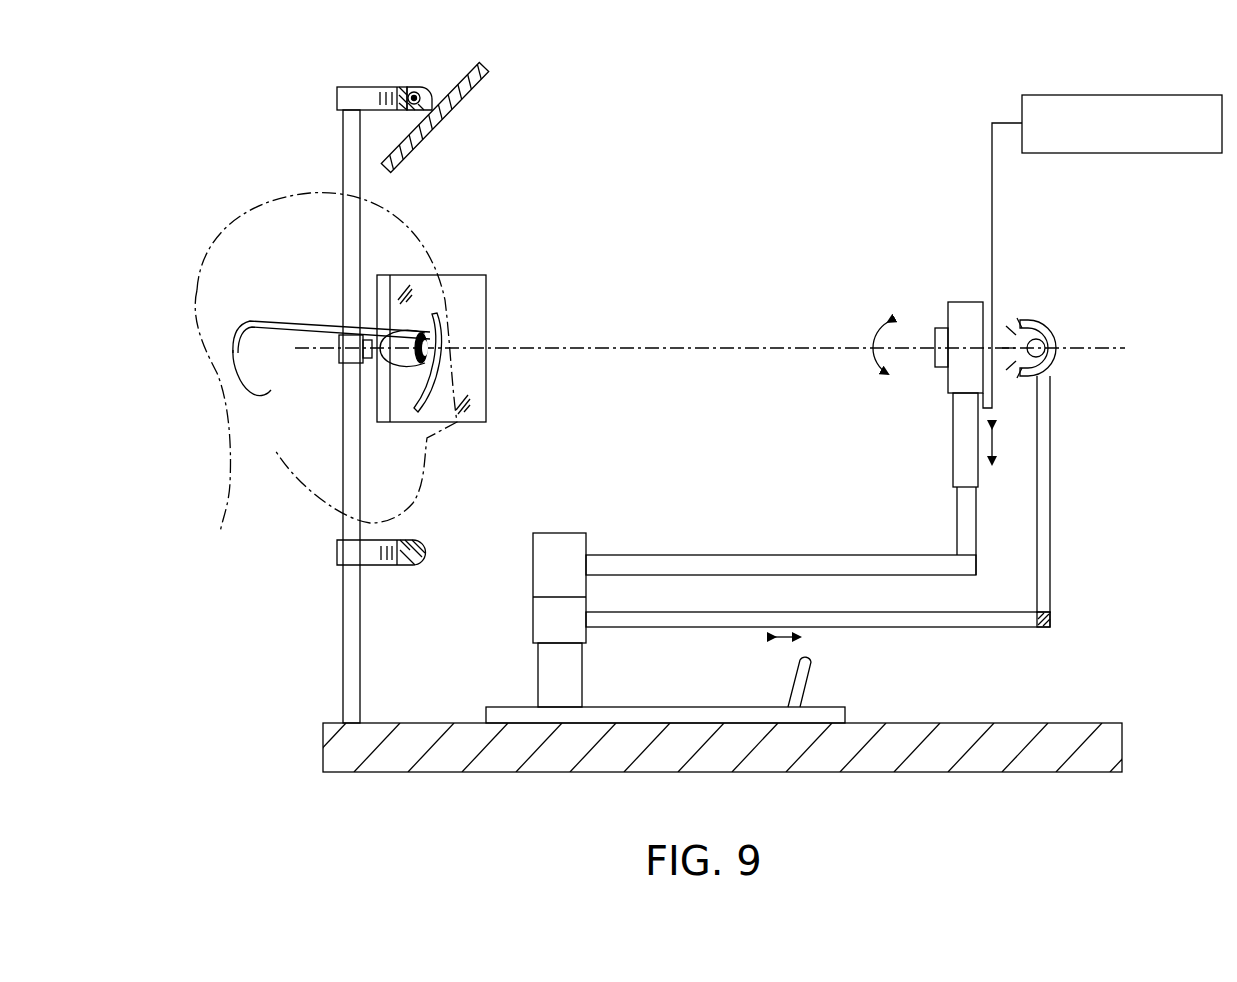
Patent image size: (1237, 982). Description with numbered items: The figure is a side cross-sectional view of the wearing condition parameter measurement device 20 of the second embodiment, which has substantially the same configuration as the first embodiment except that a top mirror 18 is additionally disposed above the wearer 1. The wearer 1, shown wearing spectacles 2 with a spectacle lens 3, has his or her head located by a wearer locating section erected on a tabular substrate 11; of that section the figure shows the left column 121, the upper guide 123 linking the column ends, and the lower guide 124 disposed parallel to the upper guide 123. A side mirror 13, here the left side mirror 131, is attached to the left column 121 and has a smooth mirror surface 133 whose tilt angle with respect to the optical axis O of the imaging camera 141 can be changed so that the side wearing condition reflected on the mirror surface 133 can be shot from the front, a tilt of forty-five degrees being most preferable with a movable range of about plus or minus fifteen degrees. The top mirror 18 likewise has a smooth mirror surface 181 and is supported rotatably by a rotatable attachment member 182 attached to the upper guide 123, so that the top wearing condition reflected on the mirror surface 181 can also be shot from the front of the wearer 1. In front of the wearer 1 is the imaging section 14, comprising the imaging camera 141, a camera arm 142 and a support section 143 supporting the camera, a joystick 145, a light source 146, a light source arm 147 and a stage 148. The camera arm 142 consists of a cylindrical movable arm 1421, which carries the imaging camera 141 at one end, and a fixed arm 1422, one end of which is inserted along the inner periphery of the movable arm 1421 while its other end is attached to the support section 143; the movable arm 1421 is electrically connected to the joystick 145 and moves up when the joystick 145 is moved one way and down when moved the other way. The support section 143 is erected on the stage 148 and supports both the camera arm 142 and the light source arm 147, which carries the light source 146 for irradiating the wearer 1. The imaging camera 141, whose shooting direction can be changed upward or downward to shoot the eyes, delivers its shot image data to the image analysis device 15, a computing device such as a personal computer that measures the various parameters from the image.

The wearer 1 is at (232, 214).
The spectacles 2 is at (438, 300).
The spectacle lens 3 is at (450, 360).
The substrate 11 is at (548, 772).
The side mirror 13 is at (425, 348).
The imaging section 14 is at (823, 284).
The image analysis device 15 is at (1130, 95).
The top mirror 18 is at (474, 118).
The wearing condition parameter measurement device 20 is at (818, 100).
The left column 121 is at (342, 652).
The upper guide 123 is at (388, 86).
The lower guide 124 is at (420, 540).
The left side mirror 131 is at (486, 283).
The mirror surface 133 is at (473, 312).
The imaging camera 141 is at (967, 302).
The camera arm 142 is at (810, 555).
The support section 143 is at (538, 675).
The joystick 145 is at (808, 656).
The light source 146 is at (1050, 326).
The light source arm 147 is at (1052, 553).
The stage 148 is at (850, 712).
The mirror surface 181 is at (470, 107).
The rotatable attachment member 182 is at (423, 86).
The movable arm 1421 is at (953, 482).
The fixed arm 1422 is at (683, 555).
The optical axis O is at (1108, 348).